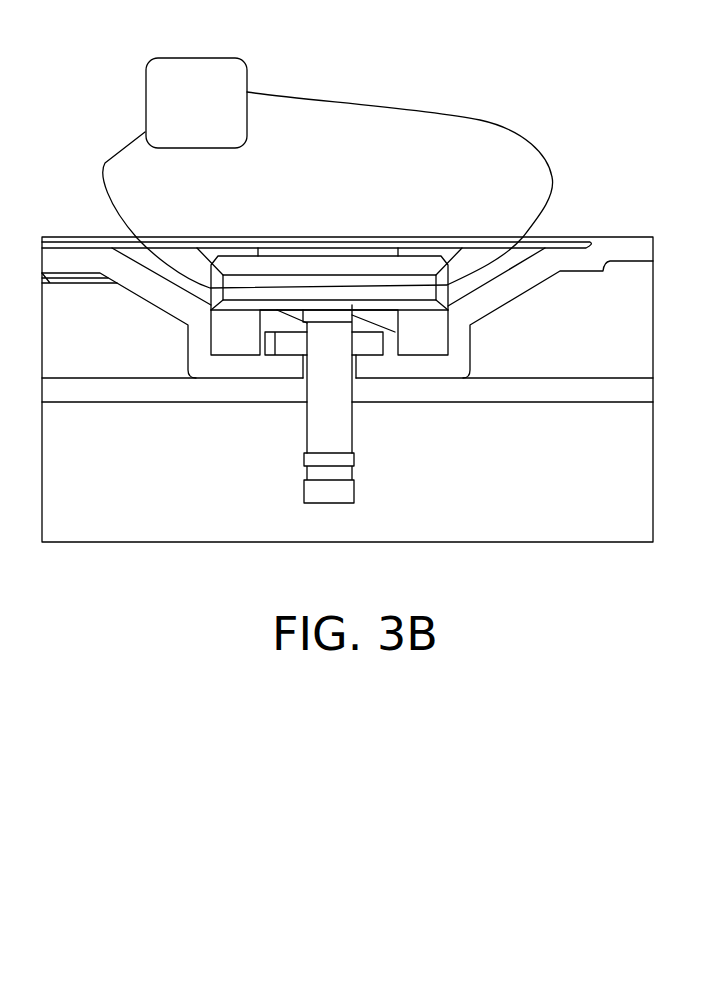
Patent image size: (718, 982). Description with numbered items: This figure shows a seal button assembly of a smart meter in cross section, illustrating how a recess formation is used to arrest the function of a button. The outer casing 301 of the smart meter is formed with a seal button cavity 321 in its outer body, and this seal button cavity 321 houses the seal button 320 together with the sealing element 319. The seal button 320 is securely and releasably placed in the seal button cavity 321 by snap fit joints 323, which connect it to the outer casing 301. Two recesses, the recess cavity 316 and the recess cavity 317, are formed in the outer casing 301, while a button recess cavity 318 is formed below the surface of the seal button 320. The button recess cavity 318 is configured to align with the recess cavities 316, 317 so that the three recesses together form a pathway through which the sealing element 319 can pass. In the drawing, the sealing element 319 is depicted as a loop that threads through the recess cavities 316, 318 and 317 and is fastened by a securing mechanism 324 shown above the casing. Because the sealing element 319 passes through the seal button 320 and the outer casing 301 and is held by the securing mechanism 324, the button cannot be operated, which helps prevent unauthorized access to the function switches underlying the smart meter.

The outer casing 301 is at (623, 287).
The recess cavity 316 is at (513, 258).
The recess cavity 317 is at (175, 265).
The button recess cavity 318 is at (300, 283).
The sealing element 319 is at (478, 120).
The seal button 320 is at (245, 265).
The seal button cavity 321 is at (410, 380).
The snap fit joints 323 is at (293, 343).
The securing mechanism 324 is at (222, 57).